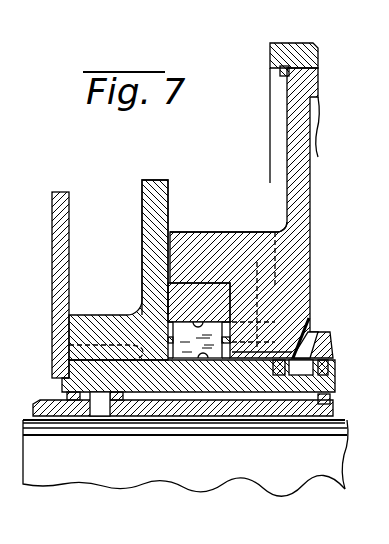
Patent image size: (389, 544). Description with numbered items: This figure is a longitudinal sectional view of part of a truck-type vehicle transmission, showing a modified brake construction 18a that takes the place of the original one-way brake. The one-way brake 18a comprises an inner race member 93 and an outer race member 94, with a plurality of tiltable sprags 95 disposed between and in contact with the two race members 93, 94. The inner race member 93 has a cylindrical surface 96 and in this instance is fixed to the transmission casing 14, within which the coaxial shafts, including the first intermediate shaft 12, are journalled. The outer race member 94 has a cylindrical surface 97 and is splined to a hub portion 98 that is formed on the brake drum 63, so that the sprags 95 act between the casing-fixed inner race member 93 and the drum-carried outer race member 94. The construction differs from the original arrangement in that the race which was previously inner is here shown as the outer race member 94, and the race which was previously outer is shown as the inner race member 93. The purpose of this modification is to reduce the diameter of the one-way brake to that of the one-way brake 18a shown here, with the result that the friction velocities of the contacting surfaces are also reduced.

The first intermediate shaft 12 is at (105, 478).
The transmission casing 14 is at (141, 205).
The modified brake construction 18a is at (238, 295).
The brake drum 63 is at (302, 44).
The inner race member 93 is at (178, 388).
The outer race member 94 is at (173, 296).
The tiltable sprags 95 is at (170, 323).
The cylindrical surface 96 is at (202, 353).
The cylindrical surface 97 is at (201, 320).
The hub portion 98 is at (240, 232).